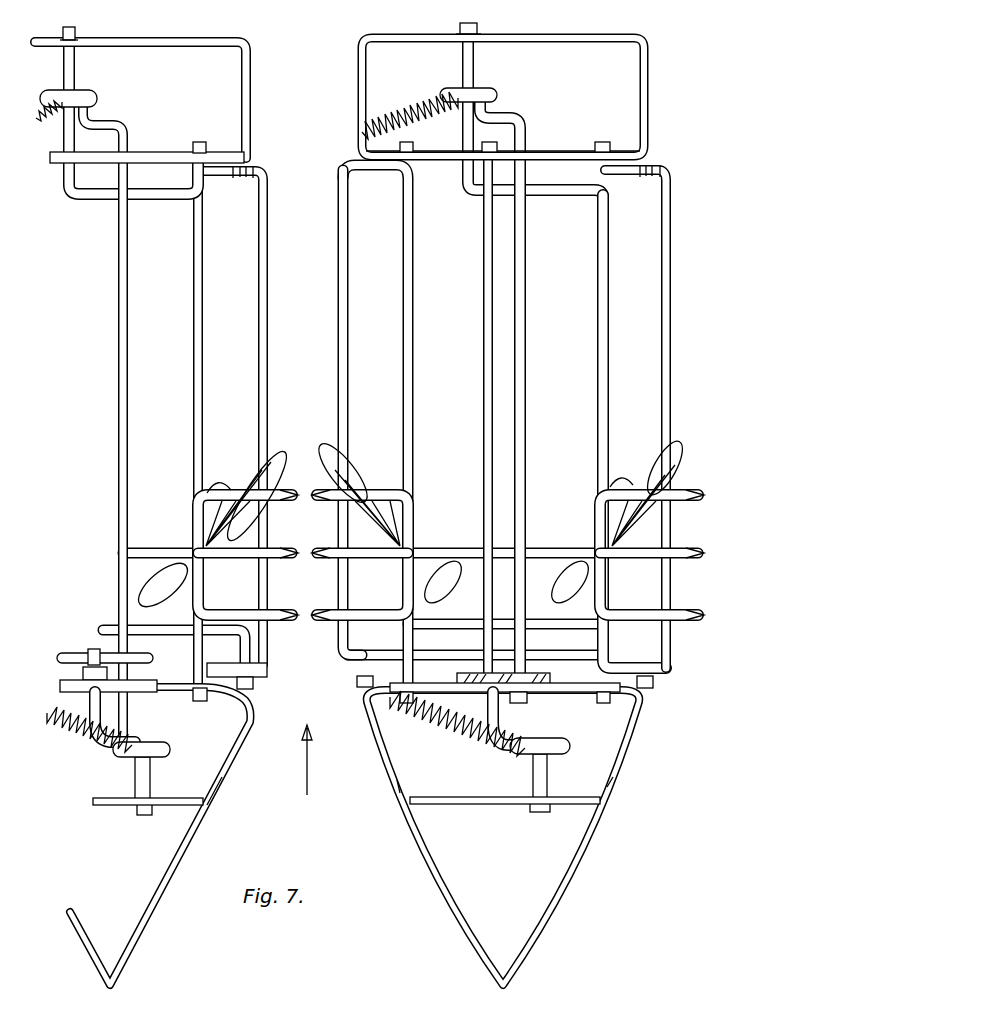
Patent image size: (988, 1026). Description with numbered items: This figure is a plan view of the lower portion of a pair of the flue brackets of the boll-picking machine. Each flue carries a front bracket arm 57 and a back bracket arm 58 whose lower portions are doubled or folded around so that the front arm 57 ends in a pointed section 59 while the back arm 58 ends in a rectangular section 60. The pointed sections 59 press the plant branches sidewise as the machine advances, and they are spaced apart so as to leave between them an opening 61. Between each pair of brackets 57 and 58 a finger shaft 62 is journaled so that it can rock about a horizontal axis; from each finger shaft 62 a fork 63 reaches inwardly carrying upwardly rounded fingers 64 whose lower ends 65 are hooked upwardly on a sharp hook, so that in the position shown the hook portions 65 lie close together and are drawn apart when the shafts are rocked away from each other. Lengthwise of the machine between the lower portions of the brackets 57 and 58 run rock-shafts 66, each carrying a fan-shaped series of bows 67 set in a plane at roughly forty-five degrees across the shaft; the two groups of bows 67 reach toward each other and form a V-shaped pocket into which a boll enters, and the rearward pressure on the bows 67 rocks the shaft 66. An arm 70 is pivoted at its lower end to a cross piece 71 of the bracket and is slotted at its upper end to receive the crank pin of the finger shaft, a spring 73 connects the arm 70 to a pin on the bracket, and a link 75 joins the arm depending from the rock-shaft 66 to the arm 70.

The front bracket arm 57 is at (158, 693).
The back bracket arm 58 is at (160, 156).
The pointed section 59 is at (142, 944).
The rectangular section 60 is at (357, 63).
The opening 61 is at (309, 772).
The finger shaft 62 is at (486, 431).
The fork 63 is at (153, 556).
The finger 64 is at (227, 612).
The hooked lower end 65 is at (297, 497).
The rock-shaft 66 is at (196, 331).
The bow 67 is at (258, 463).
The arm 70 is at (98, 97).
The cross piece 71 is at (123, 806).
The spring 73 is at (50, 114).
The link 75 is at (430, 654).